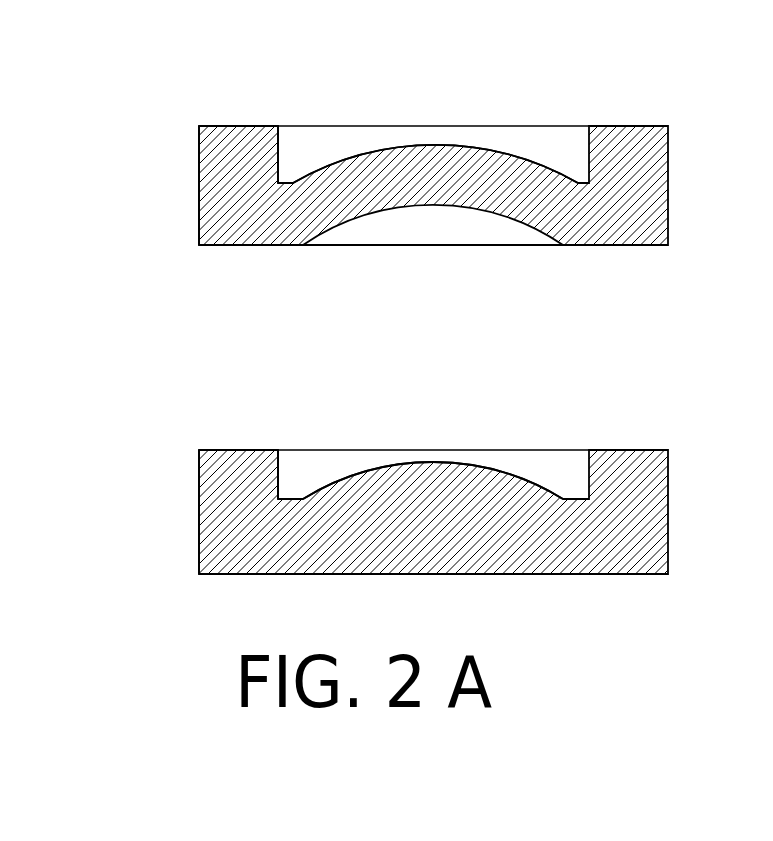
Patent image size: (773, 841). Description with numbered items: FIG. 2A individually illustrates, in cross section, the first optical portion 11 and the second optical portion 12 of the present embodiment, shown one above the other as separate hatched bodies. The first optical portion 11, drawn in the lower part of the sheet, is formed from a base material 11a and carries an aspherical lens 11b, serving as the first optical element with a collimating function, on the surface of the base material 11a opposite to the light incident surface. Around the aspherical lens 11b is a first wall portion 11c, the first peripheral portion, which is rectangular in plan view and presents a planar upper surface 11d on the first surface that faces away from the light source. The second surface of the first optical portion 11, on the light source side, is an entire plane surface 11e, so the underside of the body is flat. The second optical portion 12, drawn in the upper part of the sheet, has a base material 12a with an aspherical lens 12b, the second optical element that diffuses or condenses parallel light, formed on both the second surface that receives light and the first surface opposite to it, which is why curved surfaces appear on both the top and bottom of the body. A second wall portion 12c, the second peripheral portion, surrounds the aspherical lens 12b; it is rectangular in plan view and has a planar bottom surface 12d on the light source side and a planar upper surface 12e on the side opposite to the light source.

The first optical portion 11 is at (638, 440).
The base material 11a is at (199, 517).
The aspherical lens 11b is at (497, 464).
The first wall portion 11c is at (282, 460).
The planar upper surface 11d is at (238, 450).
The entire plane surface 11e is at (582, 574).
The second optical portion 12 is at (647, 110).
The base material 12a is at (199, 200).
The aspherical lens 12b is at (540, 152).
The second wall portion 12c is at (282, 137).
The planar bottom surface 12d is at (242, 245).
The planar upper surface 12e is at (238, 126).